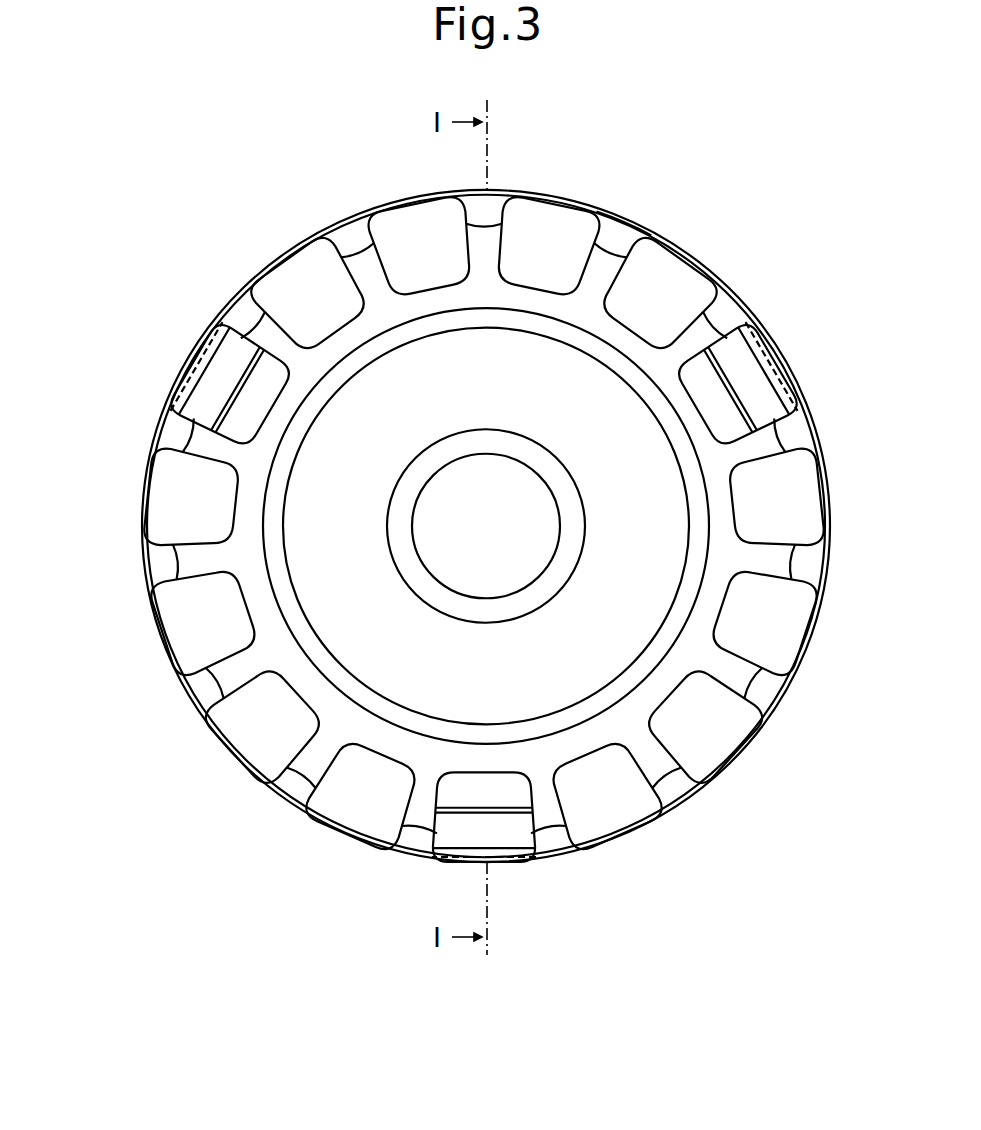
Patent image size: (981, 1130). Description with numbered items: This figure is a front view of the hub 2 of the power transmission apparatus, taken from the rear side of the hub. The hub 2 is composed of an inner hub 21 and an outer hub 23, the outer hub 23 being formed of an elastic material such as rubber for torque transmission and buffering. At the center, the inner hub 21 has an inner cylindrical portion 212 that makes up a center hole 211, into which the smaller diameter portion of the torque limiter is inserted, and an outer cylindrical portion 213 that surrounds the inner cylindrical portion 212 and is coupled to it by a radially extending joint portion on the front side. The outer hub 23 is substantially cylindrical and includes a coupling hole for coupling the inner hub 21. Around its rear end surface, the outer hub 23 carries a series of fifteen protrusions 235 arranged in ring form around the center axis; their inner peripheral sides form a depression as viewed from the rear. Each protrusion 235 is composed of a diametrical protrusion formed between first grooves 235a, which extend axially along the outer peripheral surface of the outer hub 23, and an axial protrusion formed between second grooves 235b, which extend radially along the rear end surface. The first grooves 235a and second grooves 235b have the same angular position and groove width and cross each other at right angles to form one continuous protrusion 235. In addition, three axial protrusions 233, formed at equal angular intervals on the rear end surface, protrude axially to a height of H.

The hub 2 is at (261, 226).
The inner hub 21 is at (362, 610).
The center hole 211 is at (466, 515).
The inner cylindrical portion 212 is at (402, 487).
The outer cylindrical portion 213 is at (268, 527).
The outer hub 23 is at (413, 748).
The axial protrusions 233 is at (210, 372).
The protrusions 235 is at (662, 287).
The first grooves 235a is at (618, 233).
The second grooves 235b is at (617, 236).